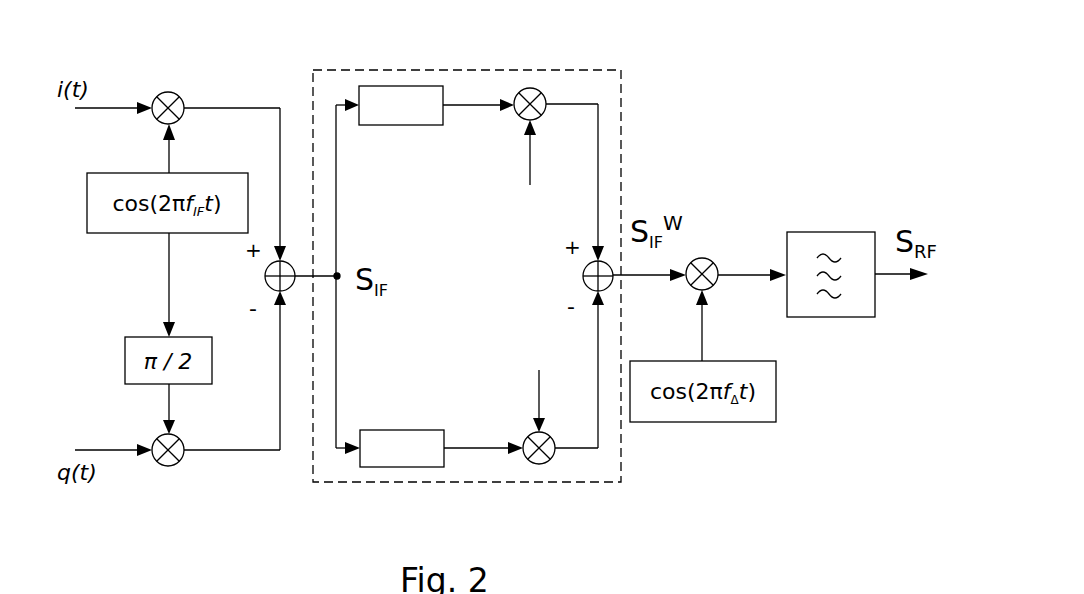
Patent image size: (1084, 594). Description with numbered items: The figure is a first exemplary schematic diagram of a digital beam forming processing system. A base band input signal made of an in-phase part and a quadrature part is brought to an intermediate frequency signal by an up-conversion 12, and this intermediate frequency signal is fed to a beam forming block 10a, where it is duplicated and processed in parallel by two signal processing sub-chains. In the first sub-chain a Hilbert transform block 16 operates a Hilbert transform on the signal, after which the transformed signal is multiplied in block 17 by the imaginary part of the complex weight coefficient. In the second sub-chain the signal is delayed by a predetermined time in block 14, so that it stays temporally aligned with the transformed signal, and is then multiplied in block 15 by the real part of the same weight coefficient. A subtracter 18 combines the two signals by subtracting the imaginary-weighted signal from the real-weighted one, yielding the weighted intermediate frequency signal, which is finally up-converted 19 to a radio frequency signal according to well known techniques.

The beam forming block 10a is at (621, 105).
The up-conversion 12 is at (177, 482).
The delay block 14 is at (430, 95).
The real part multiplier block 15 is at (527, 93).
The Hilbert transform block 16 is at (372, 457).
The imaginary part multiplier block 17 is at (537, 458).
The subtracter 18 is at (610, 280).
The up-conversion to radio frequency 19 is at (724, 242).